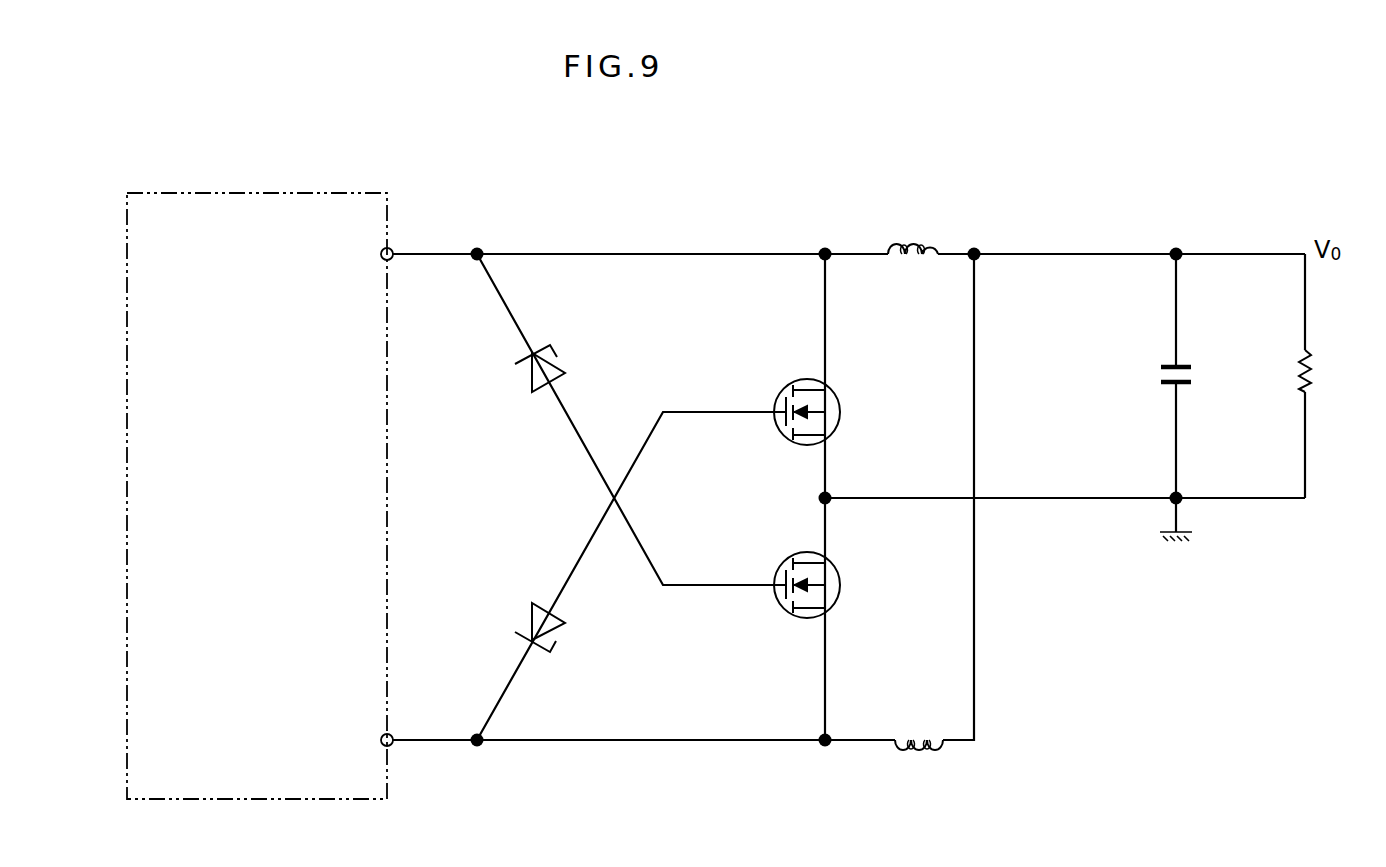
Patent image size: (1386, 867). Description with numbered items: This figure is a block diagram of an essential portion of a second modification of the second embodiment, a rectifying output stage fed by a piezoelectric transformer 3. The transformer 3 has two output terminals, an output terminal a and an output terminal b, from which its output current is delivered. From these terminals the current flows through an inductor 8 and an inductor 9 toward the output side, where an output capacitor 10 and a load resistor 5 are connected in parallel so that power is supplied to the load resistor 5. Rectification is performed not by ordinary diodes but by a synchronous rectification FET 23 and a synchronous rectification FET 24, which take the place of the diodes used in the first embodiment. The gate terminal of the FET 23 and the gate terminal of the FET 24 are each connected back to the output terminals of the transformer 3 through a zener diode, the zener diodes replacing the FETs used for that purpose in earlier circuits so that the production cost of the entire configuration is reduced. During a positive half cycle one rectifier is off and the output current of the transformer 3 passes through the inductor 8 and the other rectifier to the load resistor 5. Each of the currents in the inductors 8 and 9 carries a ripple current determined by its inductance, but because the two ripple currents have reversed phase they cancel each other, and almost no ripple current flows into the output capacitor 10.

The piezoelectric transformer 3 is at (283, 192).
The output terminal a is at (396, 249).
The output terminal b is at (391, 745).
The inductor 8 is at (916, 245).
The inductor 9 is at (917, 751).
The synchronous rectification FET 23 is at (841, 412).
The synchronous rectification FET 24 is at (841, 585).
The output capacitor 10 is at (1192, 374).
The load resistor 5 is at (1312, 377).